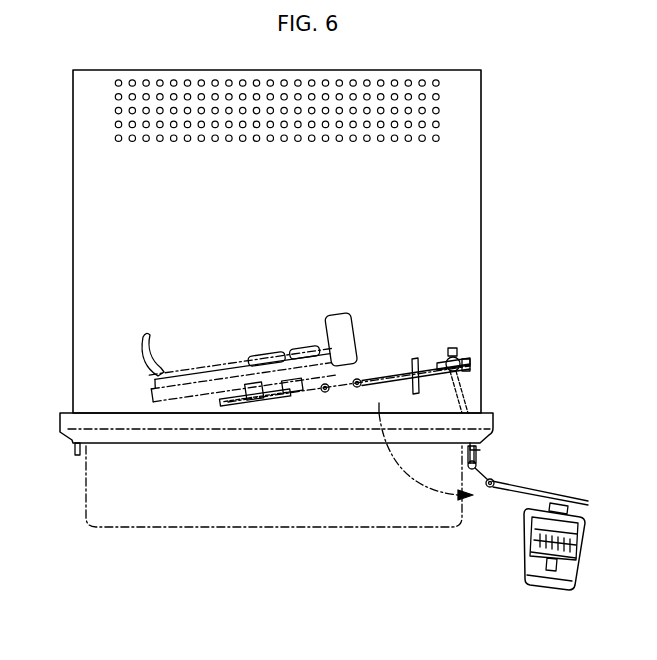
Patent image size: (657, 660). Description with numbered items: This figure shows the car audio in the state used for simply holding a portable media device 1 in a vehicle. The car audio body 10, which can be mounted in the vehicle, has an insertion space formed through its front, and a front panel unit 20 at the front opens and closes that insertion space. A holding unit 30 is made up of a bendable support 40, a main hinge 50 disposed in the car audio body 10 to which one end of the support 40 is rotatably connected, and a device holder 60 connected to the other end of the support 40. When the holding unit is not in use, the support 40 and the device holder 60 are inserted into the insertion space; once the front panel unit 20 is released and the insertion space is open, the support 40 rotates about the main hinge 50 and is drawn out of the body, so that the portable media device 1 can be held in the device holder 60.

The portable media device 1 is at (527, 577).
The car audio body 10 is at (73, 315).
The front panel unit 20 is at (86, 478).
The holding unit 30 is at (597, 340).
The support 40 is at (527, 508).
The main hinge 50 is at (588, 518).
The device holder 60 is at (466, 360).